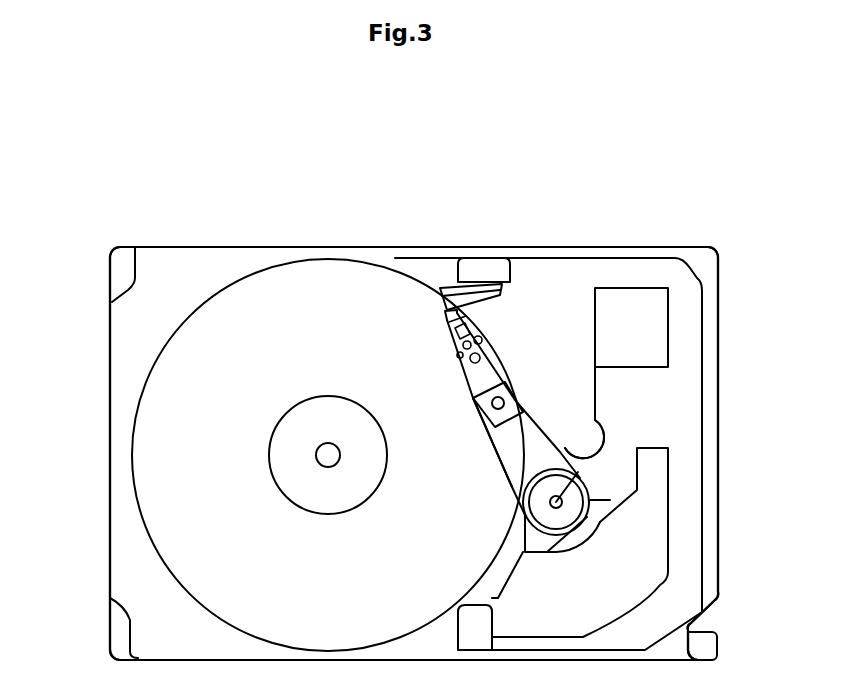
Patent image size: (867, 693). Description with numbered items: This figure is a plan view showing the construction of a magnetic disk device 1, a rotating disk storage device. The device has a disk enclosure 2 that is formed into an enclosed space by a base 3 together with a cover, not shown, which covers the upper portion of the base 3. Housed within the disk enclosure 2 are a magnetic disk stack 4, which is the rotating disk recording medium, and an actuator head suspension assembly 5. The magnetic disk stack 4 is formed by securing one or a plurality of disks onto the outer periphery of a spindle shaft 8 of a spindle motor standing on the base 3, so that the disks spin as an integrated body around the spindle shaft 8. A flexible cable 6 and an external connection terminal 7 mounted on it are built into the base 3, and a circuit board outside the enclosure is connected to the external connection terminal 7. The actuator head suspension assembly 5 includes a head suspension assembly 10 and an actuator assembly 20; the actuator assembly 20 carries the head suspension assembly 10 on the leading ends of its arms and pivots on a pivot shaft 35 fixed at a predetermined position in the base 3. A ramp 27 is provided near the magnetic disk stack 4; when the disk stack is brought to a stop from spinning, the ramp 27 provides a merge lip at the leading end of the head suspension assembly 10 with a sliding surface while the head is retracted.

The magnetic disk device 1 is at (458, 200).
The disk enclosure 2 is at (712, 473).
The base 3 is at (735, 256).
The magnetic disk stack 4 is at (155, 448).
The actuator head suspension assembly 5 is at (530, 389).
The flexible cable 6 is at (593, 403).
The external connection terminal 7 is at (635, 328).
The spindle shaft 8 is at (327, 457).
The head suspension assembly 10 is at (482, 373).
The actuator assembly 20 is at (513, 448).
The ramp 27 is at (488, 300).
The pivot shaft 35 is at (585, 478).